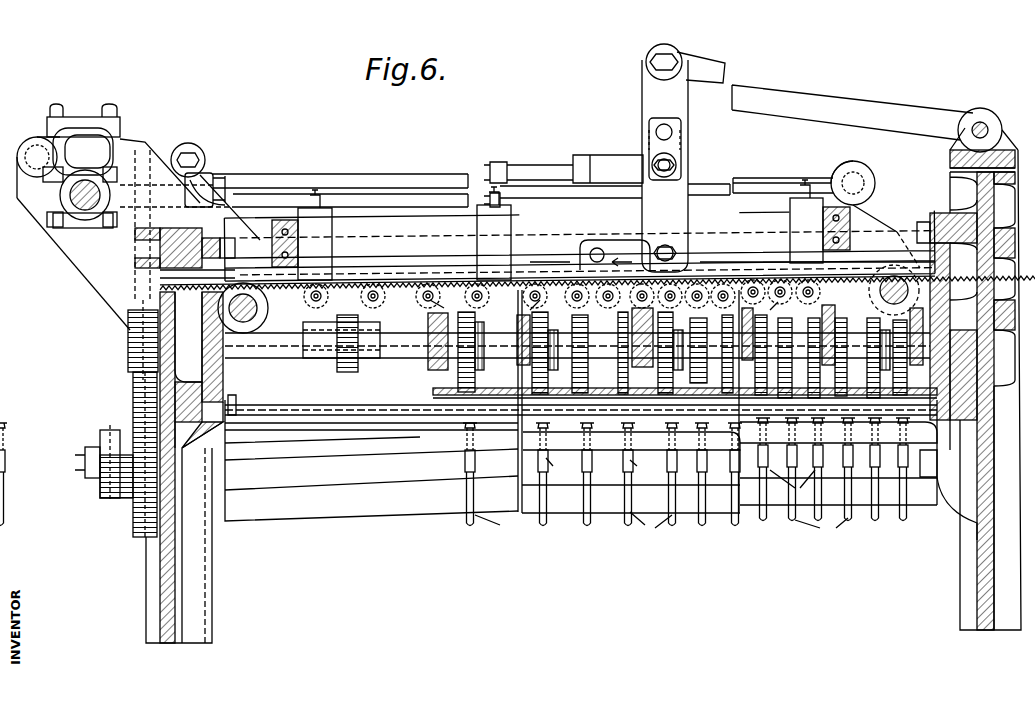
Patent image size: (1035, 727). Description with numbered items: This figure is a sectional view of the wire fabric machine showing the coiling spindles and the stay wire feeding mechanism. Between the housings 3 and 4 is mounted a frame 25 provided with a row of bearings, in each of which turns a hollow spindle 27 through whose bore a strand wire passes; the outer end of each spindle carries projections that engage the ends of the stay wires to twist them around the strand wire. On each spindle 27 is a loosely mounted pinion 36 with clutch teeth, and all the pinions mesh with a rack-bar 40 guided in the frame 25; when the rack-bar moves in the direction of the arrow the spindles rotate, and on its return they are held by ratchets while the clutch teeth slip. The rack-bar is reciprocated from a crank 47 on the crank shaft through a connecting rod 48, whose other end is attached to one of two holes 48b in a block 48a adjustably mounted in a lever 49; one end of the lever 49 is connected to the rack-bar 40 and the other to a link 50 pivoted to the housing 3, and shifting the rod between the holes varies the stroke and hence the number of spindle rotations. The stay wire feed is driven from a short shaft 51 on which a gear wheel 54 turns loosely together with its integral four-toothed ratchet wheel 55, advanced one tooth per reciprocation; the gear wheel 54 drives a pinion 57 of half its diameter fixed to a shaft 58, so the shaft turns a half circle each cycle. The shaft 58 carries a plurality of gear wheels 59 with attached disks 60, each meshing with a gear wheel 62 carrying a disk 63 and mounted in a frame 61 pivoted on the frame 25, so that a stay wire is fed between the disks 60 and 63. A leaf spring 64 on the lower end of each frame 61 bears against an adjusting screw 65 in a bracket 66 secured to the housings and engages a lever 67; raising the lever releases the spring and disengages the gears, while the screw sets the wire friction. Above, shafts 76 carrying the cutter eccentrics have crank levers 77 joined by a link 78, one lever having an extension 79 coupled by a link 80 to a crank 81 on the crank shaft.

The housing 3 is at (968, 571).
The housing 4 is at (212, 583).
The frame 25 is at (535, 240).
The hollow spindle 27 is at (410, 290).
The pinion 36 is at (562, 298).
The rack-bar 40 is at (612, 254).
The crank 47 is at (70, 195).
The connecting rod 48 is at (364, 178).
The block 48a is at (681, 143).
The holes 48b is at (655, 132).
The lever 49 is at (683, 158).
The link 50 is at (852, 112).
The short shaft 51 is at (85, 455).
The gear wheel 54 is at (134, 404).
The ratchet wheel 55 is at (108, 470).
The pinion 57 is at (131, 348).
The shaft 58 is at (282, 348).
The gear wheels 59 is at (606, 303).
The disks 60 is at (682, 331).
The frame 61 is at (468, 418).
The gear wheel 62 is at (462, 372).
The disk 63 is at (476, 386).
The leaf spring 64 is at (455, 472).
The adjusting screw 65 is at (680, 479).
The bracket 66 is at (581, 405).
The lever 67 is at (661, 528).
The shafts 76 is at (258, 308).
The crank levers 77 is at (555, 214).
The link 78 is at (575, 240).
The extension 79 is at (213, 168).
The link 80 is at (163, 152).
The crank 81 is at (50, 130).